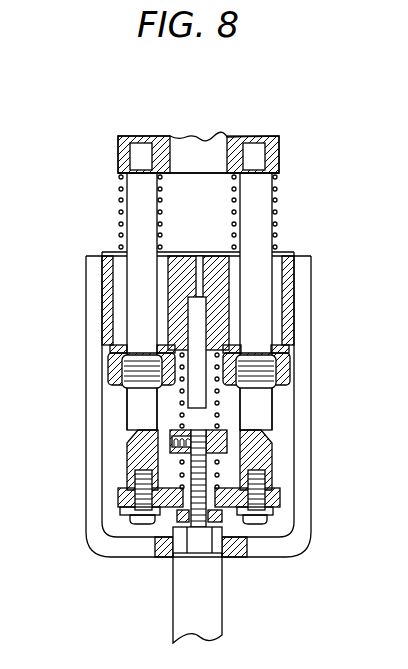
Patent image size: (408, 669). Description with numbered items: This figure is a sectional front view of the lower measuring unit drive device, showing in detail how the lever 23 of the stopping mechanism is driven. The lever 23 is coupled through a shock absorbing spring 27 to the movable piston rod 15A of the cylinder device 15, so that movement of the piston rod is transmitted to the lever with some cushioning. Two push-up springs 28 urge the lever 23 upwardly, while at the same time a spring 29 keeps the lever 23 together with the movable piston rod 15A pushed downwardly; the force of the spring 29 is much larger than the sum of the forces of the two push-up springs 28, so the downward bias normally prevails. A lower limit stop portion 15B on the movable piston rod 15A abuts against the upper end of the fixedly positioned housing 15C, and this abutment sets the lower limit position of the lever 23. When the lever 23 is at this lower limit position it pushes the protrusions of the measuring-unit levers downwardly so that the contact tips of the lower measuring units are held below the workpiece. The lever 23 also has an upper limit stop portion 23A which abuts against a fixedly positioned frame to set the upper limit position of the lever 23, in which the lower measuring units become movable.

The lever 23 is at (215, 136).
The push-up springs 28 is at (119, 200).
The upper limit stop portion 23A is at (107, 357).
The spring 29 is at (180, 406).
The shock absorbing spring 27 is at (188, 462).
The movable piston rod 15A is at (208, 475).
The lower limit stop portion 15B is at (176, 512).
The housing 15C is at (215, 577).
The cylinder device 15 is at (223, 616).